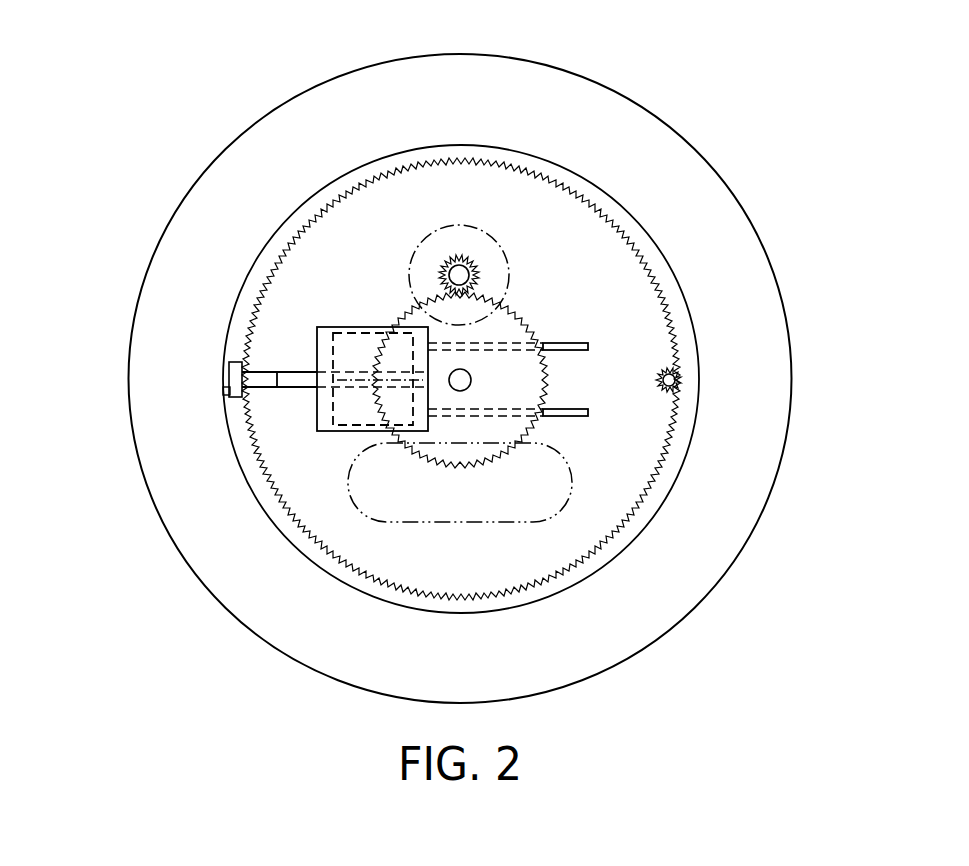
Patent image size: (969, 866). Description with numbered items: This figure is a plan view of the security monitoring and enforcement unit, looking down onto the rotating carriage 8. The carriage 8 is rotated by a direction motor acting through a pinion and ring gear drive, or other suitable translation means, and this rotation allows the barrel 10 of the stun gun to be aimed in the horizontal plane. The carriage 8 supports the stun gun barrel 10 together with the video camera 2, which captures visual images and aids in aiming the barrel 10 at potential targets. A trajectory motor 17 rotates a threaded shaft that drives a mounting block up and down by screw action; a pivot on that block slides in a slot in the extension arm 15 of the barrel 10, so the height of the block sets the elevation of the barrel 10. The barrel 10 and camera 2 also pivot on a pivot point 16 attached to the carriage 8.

The rotating carriage 8 is at (563, 187).
The trajectory motor 17 is at (525, 317).
The barrel 10 is at (315, 372).
The video camera 2 is at (258, 376).
The pivot point 16 is at (223, 392).
The extension arm 15 is at (572, 409).